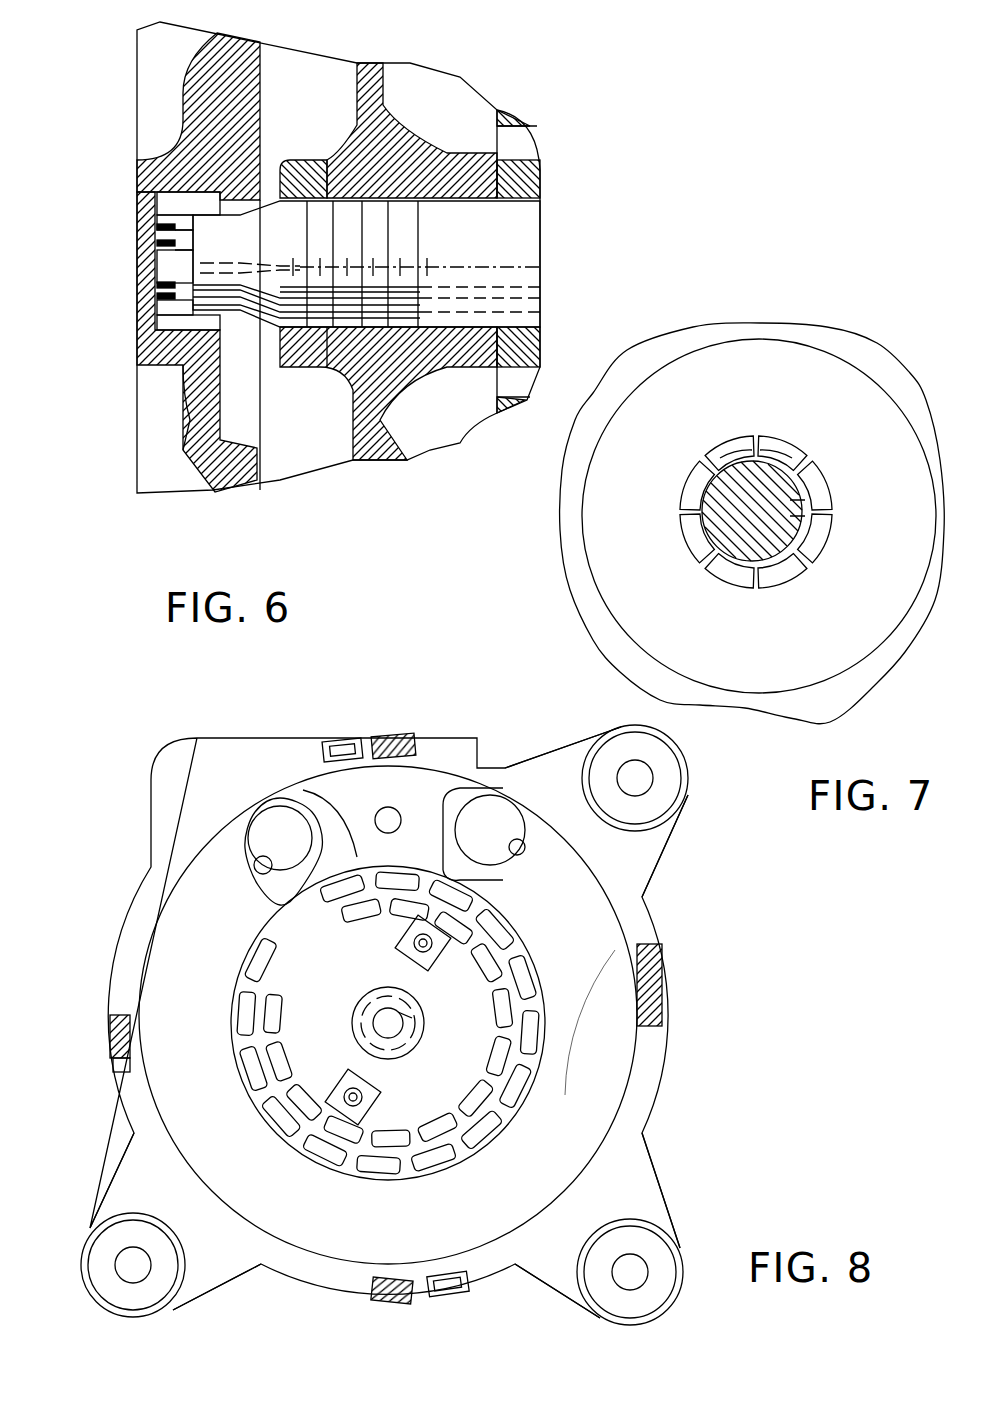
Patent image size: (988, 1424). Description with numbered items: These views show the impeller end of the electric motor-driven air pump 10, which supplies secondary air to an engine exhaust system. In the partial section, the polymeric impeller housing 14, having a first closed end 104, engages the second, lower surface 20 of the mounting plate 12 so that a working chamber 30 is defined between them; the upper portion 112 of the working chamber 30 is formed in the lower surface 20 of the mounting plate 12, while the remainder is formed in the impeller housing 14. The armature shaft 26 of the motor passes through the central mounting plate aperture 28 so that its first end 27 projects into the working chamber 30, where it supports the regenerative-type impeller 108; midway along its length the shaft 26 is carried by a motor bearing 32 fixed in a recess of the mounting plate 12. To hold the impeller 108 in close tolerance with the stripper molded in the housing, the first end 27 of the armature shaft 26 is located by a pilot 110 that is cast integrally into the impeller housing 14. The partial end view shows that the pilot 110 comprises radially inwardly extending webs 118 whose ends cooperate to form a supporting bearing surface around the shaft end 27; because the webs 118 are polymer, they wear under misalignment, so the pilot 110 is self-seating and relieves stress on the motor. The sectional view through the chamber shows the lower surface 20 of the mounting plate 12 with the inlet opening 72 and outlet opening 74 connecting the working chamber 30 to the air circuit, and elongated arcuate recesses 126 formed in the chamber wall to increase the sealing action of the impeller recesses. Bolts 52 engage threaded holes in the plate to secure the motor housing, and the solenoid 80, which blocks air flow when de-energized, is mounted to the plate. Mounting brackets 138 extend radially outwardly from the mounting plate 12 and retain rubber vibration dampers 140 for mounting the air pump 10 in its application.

In FIG. 8, the air pump 10 is at (411, 1015).
In FIG. 8, the mounting plate 12 is at (645, 916).
In FIG. 6, the impeller housing 14 is at (183, 455).
In FIG. 6, the second, lower surface 20 is at (497, 405).
In FIG. 8, the second, lower surface 20 is at (353, 797).
In FIG. 6, the armature shaft 26 is at (515, 232).
In FIG. 7, the armature shaft 26 is at (705, 525).
In FIG. 8, the armature shaft 26 is at (400, 1040).
In FIG. 6, the first end 27 is at (210, 240).
In FIG. 7, the first end 27 is at (790, 508).
In FIG. 8, the first end 27 is at (407, 1015).
In FIG. 8, the central mounting plate aperture 28 is at (367, 1016).
In FIG. 6, the working chamber 30 is at (305, 432).
In FIG. 8, the working chamber 30 is at (386, 1098).
In FIG. 8, the motor bearing 32 is at (385, 988).
In FIG. 8, the bolts 52 is at (425, 943).
In FIG. 8, the inlet opening 72 is at (515, 842).
In FIG. 8, the outlet opening 74 is at (253, 870).
In FIG. 8, the solenoid 80 is at (322, 805).
In FIG. 6, the first closed end 104 is at (187, 405).
In FIG. 6, the impeller 108 is at (398, 98).
In FIG. 6, the pilot 110 is at (158, 328).
In FIG. 7, the pilot 110 is at (714, 435).
In FIG. 8, the upper portion 112 is at (587, 1117).
In FIG. 6, the webs 118 is at (180, 202).
In FIG. 7, the webs 118 is at (803, 462).
In FIG. 8, the elongated arcuate recesses 126 is at (307, 1110).
In FIG. 8, the mounting brackets 138 is at (562, 767).
In FIG. 8, the rubber vibration dampers 140 is at (655, 800).